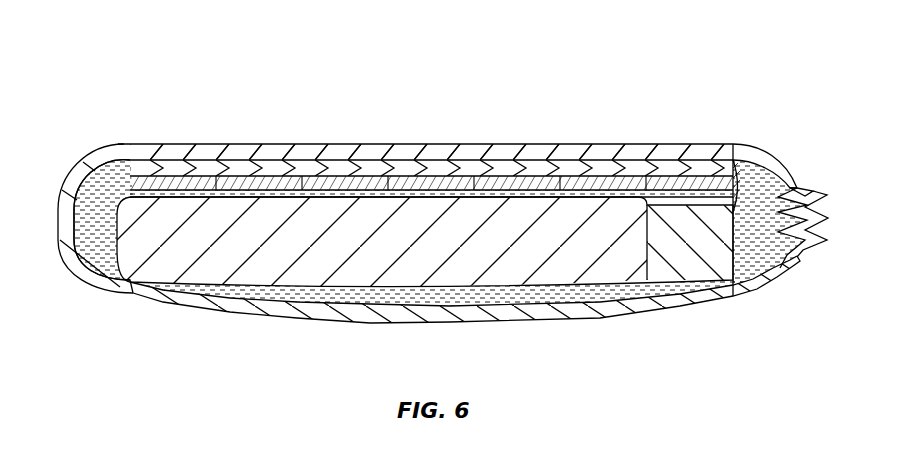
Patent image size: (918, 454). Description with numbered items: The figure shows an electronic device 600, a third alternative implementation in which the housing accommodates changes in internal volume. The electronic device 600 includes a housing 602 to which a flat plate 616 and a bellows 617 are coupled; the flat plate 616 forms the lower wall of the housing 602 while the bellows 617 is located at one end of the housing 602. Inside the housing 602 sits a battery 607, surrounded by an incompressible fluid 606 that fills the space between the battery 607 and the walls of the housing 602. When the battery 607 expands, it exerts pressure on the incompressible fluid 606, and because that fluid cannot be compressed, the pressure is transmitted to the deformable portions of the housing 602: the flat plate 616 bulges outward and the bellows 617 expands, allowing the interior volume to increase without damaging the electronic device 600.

The electronic device 600 is at (106, 76).
The housing 602 is at (782, 159).
The incompressible fluid 606 is at (77, 218).
The battery 607 is at (348, 287).
The flat plate 616 is at (614, 318).
The bellows 617 is at (828, 196).